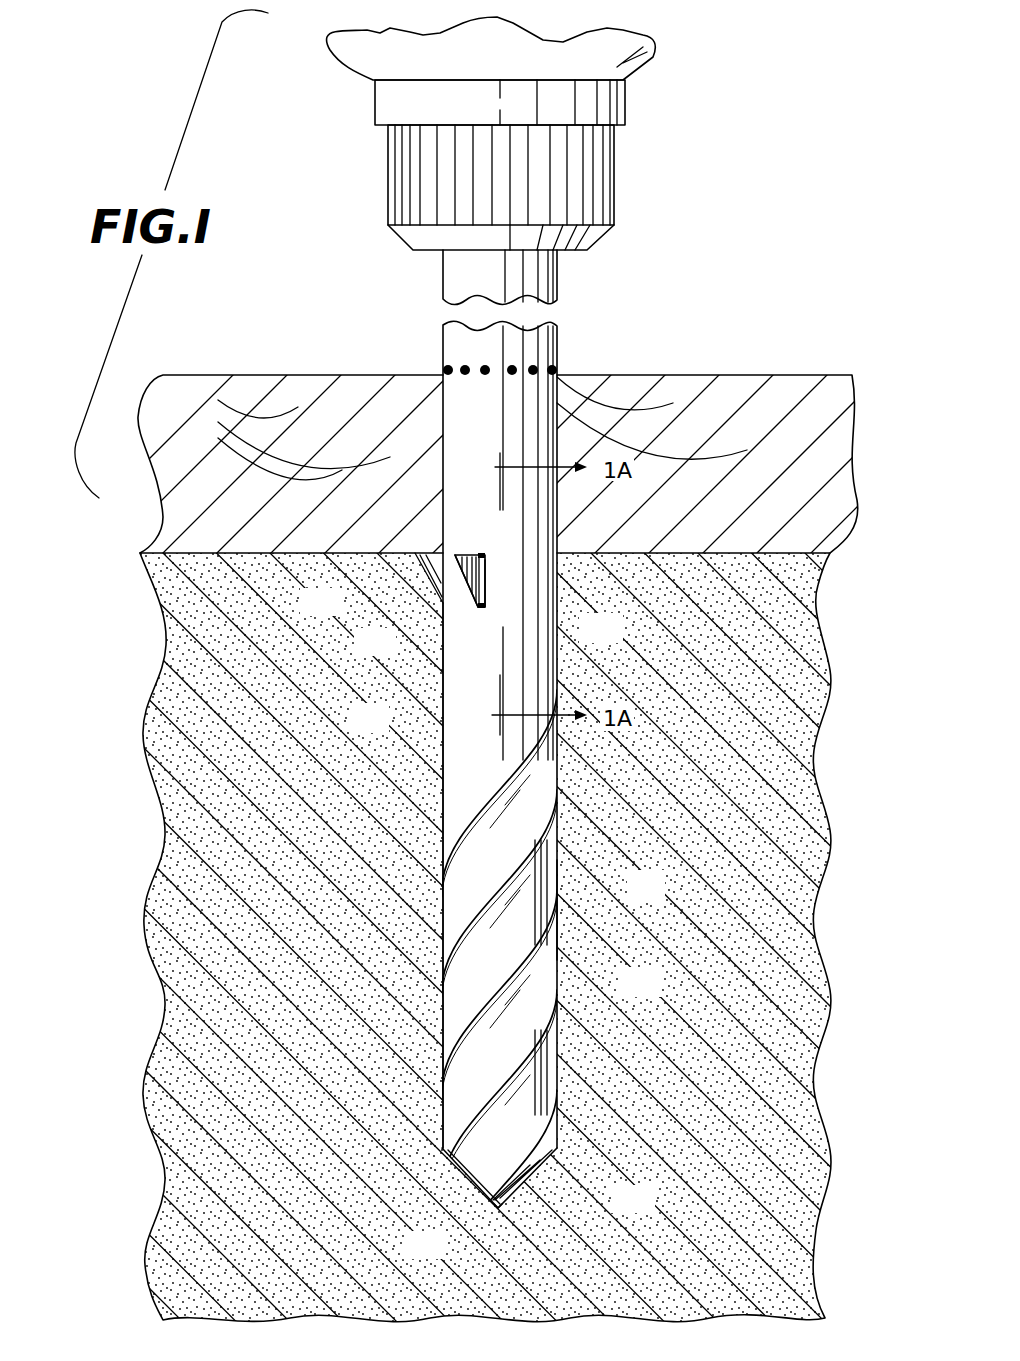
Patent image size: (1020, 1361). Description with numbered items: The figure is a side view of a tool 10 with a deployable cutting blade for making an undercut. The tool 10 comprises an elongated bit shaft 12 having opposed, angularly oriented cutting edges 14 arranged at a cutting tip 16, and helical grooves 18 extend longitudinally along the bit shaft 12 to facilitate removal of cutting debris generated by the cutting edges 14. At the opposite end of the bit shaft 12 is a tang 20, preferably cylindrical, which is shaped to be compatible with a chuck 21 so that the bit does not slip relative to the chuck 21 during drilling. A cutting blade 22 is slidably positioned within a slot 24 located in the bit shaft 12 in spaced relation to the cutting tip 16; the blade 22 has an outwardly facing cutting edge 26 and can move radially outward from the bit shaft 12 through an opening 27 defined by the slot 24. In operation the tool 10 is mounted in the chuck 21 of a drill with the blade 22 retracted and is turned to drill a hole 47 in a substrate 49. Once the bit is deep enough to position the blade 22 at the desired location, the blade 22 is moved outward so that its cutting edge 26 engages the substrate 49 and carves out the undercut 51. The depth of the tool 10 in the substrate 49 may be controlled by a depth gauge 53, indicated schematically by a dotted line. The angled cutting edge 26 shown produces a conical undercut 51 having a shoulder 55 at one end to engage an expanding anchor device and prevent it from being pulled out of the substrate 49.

The tool 10 is at (565, 653).
The bit shaft 12 is at (482, 805).
The cutting edges 14 is at (530, 1177).
The cutting tip 16 is at (498, 1208).
The helical grooves 18 is at (540, 967).
The tang 20 is at (443, 267).
The chuck 21 is at (612, 160).
The cutting blade 22 is at (438, 618).
The slot 24 is at (477, 555).
The cutting edge 26 is at (466, 583).
The opening 27 is at (486, 605).
The hole 47 is at (557, 912).
The substrate 49 is at (133, 660).
The undercut 51 is at (415, 573).
The depth gauge 53 is at (442, 368).
The shoulder 55 is at (437, 553).